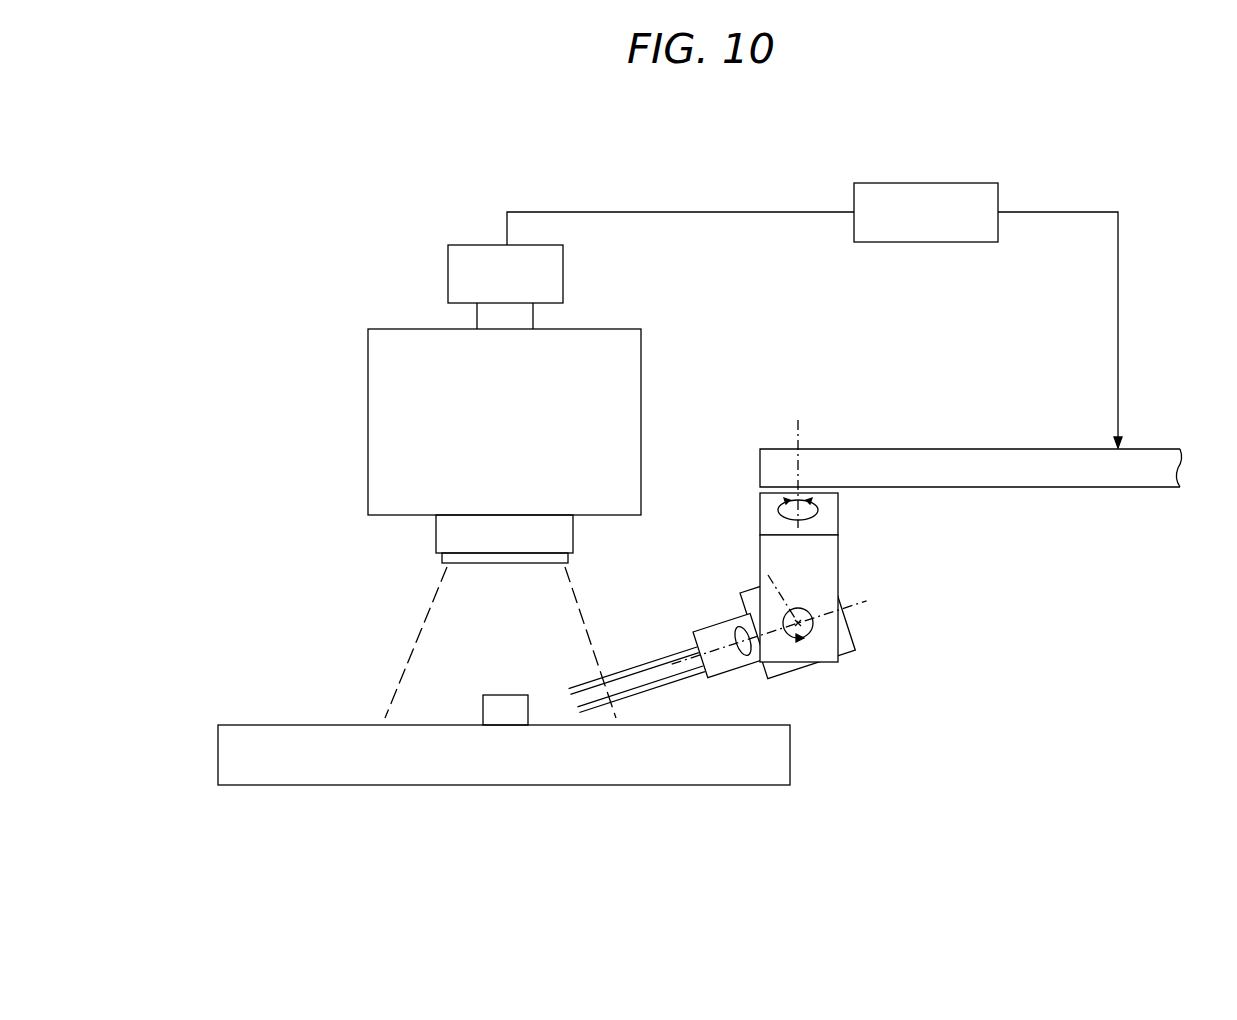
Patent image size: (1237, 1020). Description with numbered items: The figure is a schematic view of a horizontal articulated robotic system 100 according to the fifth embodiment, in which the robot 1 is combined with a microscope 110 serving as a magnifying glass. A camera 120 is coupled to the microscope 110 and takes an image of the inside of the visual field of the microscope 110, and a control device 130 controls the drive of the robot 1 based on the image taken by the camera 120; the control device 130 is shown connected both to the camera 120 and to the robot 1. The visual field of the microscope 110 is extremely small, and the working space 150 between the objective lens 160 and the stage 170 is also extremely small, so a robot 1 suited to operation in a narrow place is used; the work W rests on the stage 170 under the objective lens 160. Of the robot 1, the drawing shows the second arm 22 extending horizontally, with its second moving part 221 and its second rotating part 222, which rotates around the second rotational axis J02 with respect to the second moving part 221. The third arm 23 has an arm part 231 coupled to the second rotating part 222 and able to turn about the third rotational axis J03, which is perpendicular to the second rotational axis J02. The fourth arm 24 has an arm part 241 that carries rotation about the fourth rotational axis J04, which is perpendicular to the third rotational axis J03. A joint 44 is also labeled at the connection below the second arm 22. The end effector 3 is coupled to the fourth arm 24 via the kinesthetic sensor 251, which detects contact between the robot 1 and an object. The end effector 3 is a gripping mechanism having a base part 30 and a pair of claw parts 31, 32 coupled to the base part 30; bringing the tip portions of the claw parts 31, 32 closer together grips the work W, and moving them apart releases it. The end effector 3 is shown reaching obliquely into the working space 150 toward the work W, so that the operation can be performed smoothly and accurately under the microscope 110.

The horizontal articulated robotic system 100 is at (432, 196).
The control device 130 is at (925, 183).
The camera 120 is at (448, 272).
The microscope 110 is at (368, 420).
The objective lens 160 is at (445, 536).
The working space 150 is at (460, 620).
The stage 170 is at (508, 762).
The work W is at (495, 712).
The robot 1 is at (942, 448).
The second arm 22 is at (1037, 487).
The second moving part 221 is at (1022, 465).
The joint 44 is at (813, 487).
The second rotating part 222 is at (830, 512).
The third arm 23 is at (840, 570).
The arm part 231 is at (814, 627).
The fourth arm 24 is at (814, 665).
The arm part 241 is at (798, 670).
The kinesthetic sensor 251 is at (768, 681).
The end effector 3 is at (667, 698).
The base part 30 is at (745, 666).
The claw part 31 is at (643, 664).
The claw part 32 is at (660, 680).
The second rotational axis J02 is at (797, 463).
The third rotational axis J03 is at (768, 577).
The fourth rotational axis J04 is at (786, 626).